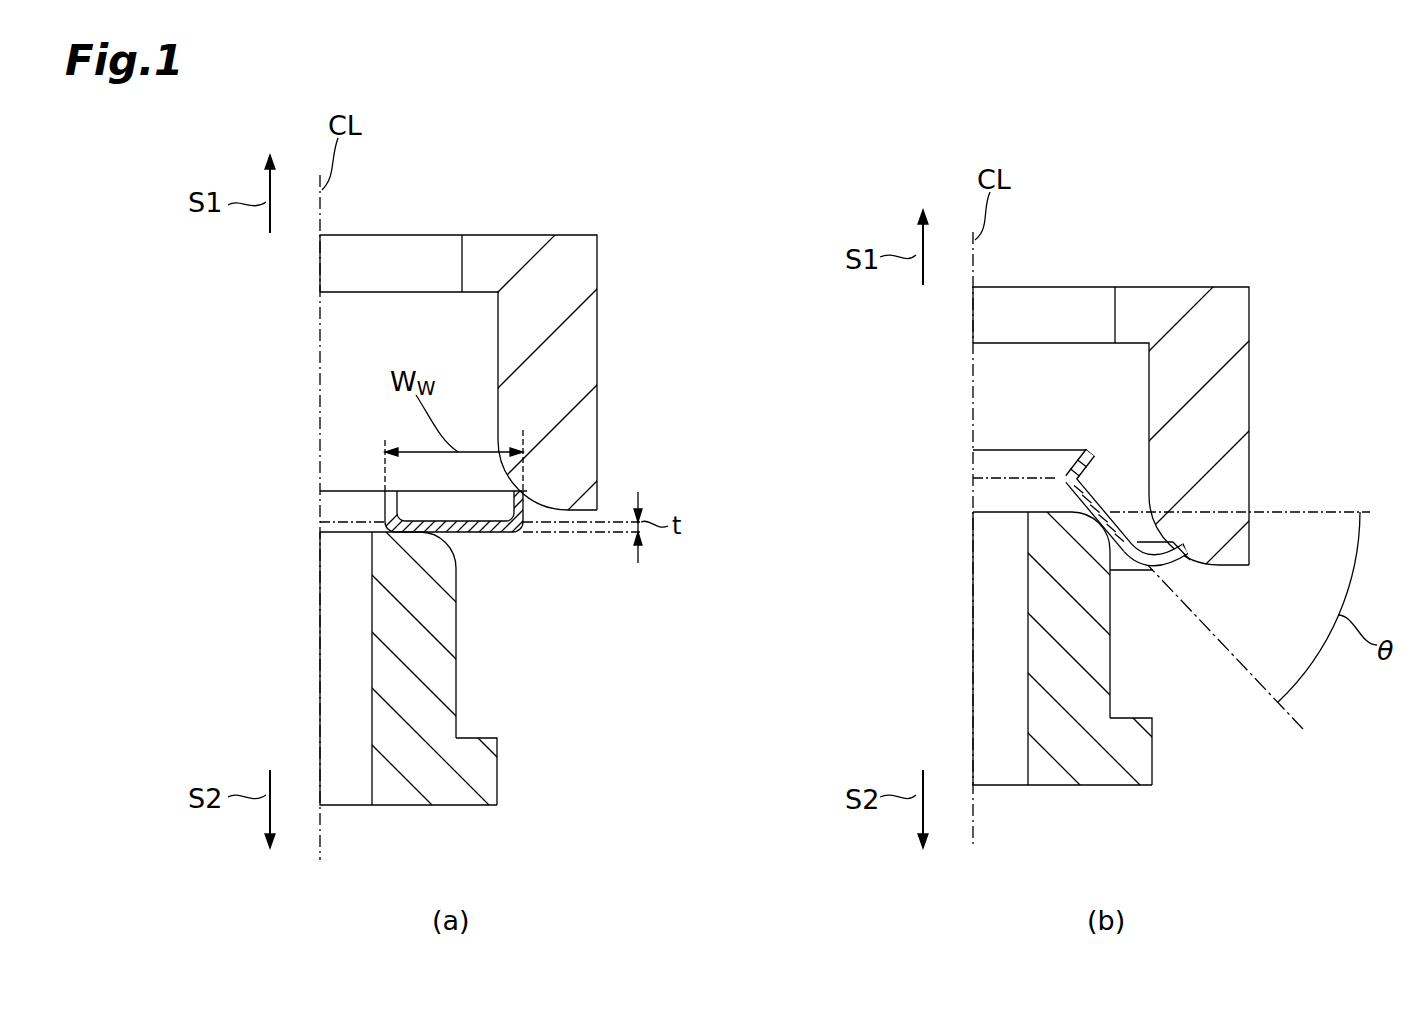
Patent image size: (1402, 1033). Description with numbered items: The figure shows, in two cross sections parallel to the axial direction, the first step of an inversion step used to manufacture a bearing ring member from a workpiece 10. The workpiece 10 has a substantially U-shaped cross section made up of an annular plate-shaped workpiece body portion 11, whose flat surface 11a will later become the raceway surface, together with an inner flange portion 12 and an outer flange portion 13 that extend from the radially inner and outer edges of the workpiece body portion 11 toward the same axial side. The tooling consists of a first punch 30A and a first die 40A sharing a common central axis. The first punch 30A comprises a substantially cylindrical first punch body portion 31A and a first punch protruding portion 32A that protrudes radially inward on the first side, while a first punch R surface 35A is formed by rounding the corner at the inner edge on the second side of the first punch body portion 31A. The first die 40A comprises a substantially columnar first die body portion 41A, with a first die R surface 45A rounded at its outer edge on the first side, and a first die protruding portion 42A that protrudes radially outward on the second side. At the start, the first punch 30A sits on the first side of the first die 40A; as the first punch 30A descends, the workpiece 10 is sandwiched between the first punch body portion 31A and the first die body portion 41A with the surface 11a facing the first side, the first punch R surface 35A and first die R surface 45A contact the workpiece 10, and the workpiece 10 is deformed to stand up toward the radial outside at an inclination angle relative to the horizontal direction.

The workpiece 10 is at (757, 519).
The workpiece body portion 11 is at (789, 536).
The surface 11a is at (776, 536).
The inner flange portion 12 is at (385, 515).
The outer flange portion 13 is at (527, 497).
The first punch 30A is at (840, 413).
The first punch body portion 31A is at (565, 352).
The first punch protruding portion 32A is at (478, 262).
The first punch R surface 35A is at (560, 505).
The first die 40A is at (738, 686).
The first die body portion 41A is at (408, 655).
The first die protruding portion 42A is at (480, 768).
The first die R surface 45A is at (460, 548).